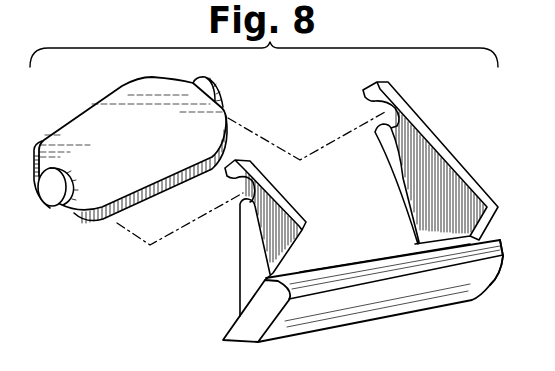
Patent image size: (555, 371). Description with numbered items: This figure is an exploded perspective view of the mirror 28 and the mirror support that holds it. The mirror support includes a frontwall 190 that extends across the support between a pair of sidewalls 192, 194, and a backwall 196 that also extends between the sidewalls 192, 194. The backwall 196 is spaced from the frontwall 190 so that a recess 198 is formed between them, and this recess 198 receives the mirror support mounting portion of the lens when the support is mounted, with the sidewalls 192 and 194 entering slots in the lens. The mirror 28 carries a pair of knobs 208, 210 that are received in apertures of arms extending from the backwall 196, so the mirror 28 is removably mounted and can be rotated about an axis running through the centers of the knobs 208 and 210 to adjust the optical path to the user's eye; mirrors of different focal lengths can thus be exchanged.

The mirror 28 is at (88, 106).
The knob 208 is at (222, 90).
The knob 210 is at (53, 197).
The frontwall 190 is at (347, 313).
The sidewall 192 is at (258, 290).
The sidewall 194 is at (504, 268).
The backwall 196 is at (410, 152).
The recess 198 is at (346, 259).